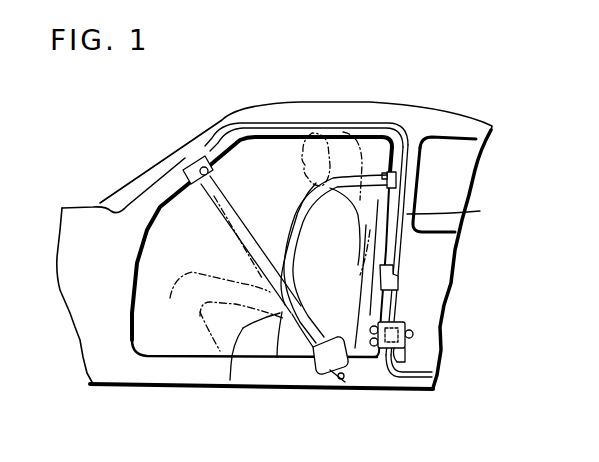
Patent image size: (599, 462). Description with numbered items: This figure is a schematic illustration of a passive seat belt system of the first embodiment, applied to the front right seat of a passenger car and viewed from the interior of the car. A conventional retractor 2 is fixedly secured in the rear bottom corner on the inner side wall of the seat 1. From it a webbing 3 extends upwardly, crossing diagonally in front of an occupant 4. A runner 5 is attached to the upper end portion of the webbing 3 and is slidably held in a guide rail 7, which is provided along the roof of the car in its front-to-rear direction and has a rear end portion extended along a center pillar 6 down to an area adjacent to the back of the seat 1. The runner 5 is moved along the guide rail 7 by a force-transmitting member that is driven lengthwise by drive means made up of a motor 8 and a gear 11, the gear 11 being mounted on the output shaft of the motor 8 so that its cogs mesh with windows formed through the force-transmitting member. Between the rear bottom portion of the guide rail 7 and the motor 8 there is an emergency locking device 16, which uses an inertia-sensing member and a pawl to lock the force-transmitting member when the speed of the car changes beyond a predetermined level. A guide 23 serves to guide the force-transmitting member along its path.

The seat 1 is at (230, 380).
The retractor 2 is at (323, 367).
The webbing 3 is at (292, 316).
The occupant 4 is at (203, 278).
The runner 5 is at (407, 143).
The center pillar 6 is at (413, 175).
The guide rail 7 is at (298, 122).
The motor 8 is at (400, 362).
The gear 11 is at (405, 322).
The emergency locking device 16 is at (398, 268).
The guide 23 is at (480, 211).